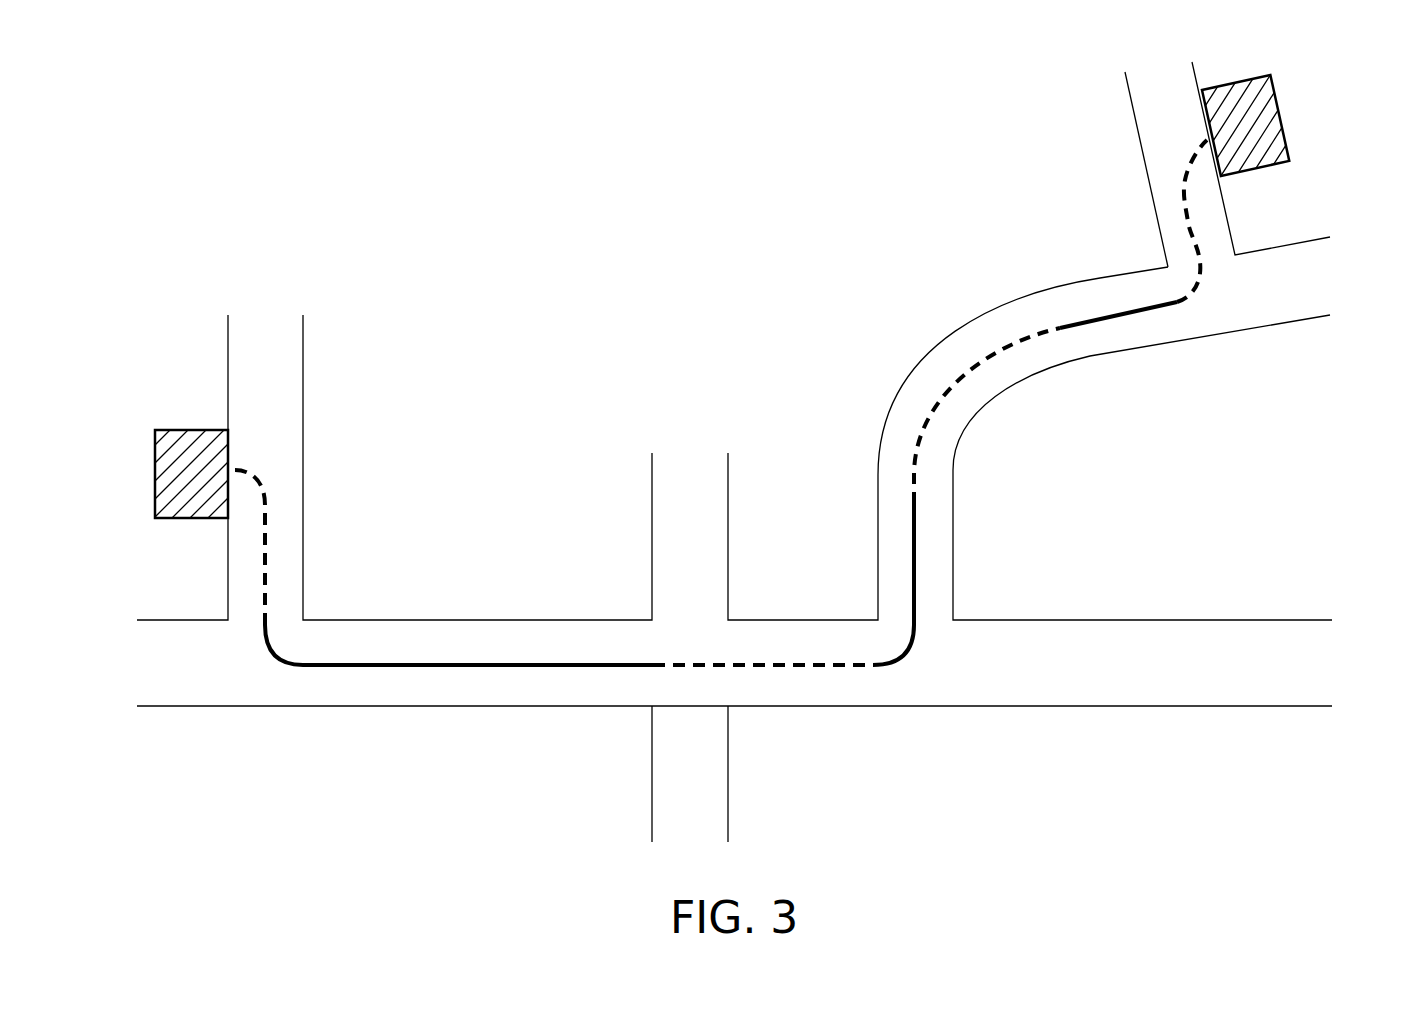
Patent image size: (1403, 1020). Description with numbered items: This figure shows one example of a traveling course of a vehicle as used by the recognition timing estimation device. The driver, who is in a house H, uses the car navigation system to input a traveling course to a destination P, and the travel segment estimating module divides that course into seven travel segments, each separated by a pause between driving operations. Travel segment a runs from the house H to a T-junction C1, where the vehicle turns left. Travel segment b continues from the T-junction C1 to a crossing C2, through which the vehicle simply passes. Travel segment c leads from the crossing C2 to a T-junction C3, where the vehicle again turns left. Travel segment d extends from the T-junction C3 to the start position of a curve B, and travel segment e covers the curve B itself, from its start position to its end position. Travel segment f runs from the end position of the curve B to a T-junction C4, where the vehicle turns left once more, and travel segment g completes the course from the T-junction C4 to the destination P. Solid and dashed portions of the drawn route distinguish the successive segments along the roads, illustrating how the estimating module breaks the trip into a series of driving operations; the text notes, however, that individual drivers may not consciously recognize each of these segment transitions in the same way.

The house H is at (193, 445).
The destination P is at (1236, 92).
The curve B is at (965, 343).
The T-junction C1 is at (265, 666).
The crossing C2 is at (678, 682).
The T-junction C3 is at (918, 656).
The T-junction C4 is at (1218, 293).
The travel segment a is at (280, 554).
The travel segment b is at (446, 679).
The travel segment c is at (785, 680).
The travel segment d is at (896, 568).
The travel segment e is at (937, 382).
The travel segment f is at (1117, 329).
The travel segment g is at (1176, 222).